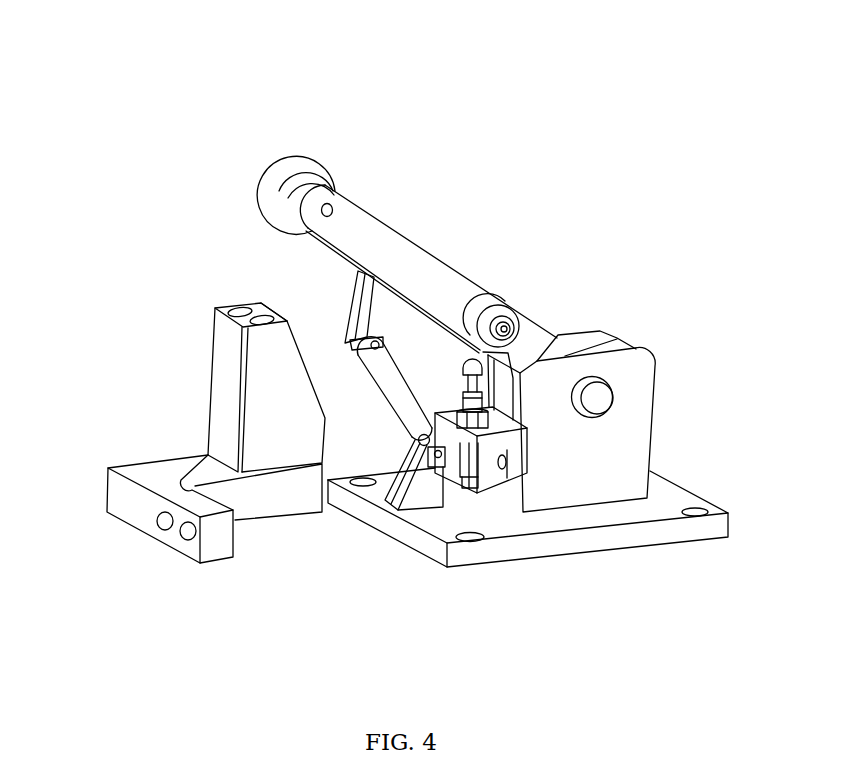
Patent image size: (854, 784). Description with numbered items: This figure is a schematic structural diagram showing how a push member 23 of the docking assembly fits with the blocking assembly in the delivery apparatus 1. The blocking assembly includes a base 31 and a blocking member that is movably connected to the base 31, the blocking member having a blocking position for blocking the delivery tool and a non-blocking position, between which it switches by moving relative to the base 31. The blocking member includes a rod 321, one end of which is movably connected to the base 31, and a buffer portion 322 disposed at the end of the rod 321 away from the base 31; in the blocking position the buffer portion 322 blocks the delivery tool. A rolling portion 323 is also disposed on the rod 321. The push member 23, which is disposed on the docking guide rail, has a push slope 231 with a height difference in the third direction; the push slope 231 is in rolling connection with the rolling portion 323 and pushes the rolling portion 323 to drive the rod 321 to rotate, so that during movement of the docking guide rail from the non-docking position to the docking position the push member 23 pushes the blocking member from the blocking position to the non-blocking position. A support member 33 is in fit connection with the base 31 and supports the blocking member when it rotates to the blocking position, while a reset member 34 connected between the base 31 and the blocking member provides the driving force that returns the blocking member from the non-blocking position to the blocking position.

The delivery apparatus 1 is at (100, 58).
The push member 23 is at (267, 403).
The push slope 231 is at (293, 338).
The base 31 is at (627, 417).
The rod 321 is at (422, 275).
The buffer portion 322 is at (290, 162).
The rolling portion 323 is at (508, 307).
The support member 33 is at (462, 488).
The reset member 34 is at (398, 397).